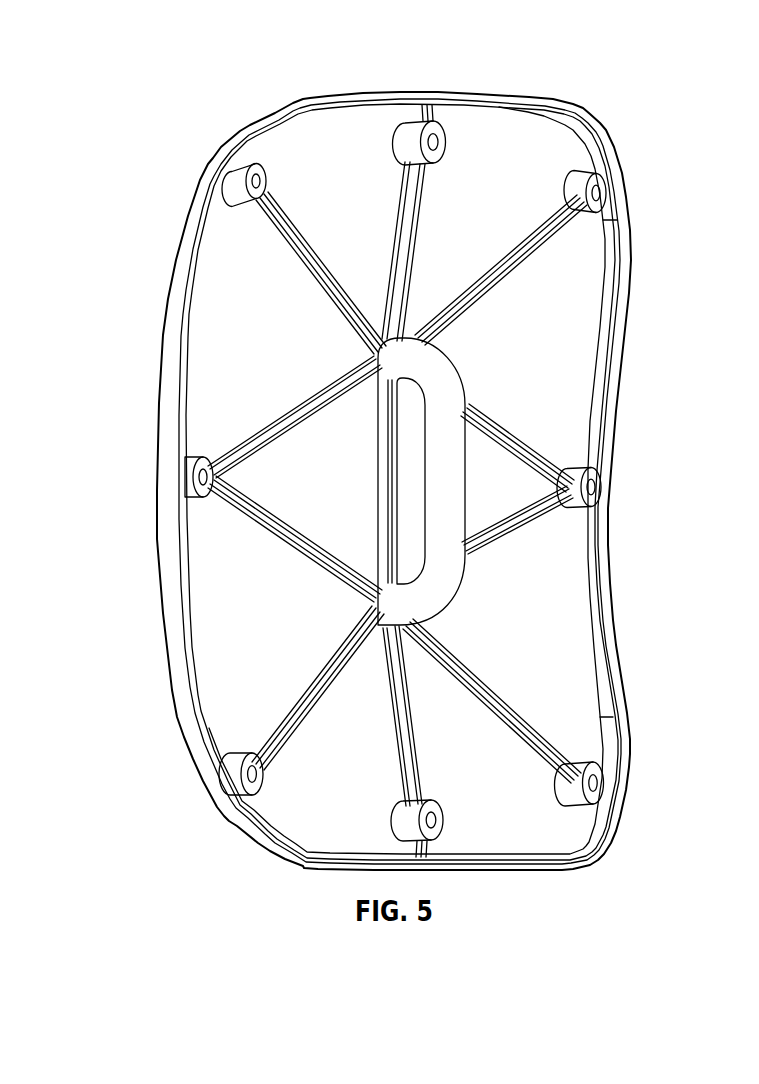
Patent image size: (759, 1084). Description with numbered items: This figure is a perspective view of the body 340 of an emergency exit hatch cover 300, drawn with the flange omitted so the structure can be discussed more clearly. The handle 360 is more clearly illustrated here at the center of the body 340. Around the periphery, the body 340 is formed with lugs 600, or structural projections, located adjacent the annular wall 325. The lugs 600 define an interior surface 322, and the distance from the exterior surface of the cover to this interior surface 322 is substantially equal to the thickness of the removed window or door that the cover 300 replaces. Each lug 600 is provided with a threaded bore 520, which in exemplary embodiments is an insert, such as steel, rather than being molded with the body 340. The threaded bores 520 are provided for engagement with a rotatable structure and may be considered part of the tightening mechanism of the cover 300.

The cover 300 is at (146, 121).
The lug 600 is at (630, 195).
The threaded bore 520 is at (605, 196).
The annular wall 325 is at (617, 360).
The body 340 is at (563, 627).
The handle 360 is at (445, 525).
The interior surface 322 is at (598, 790).